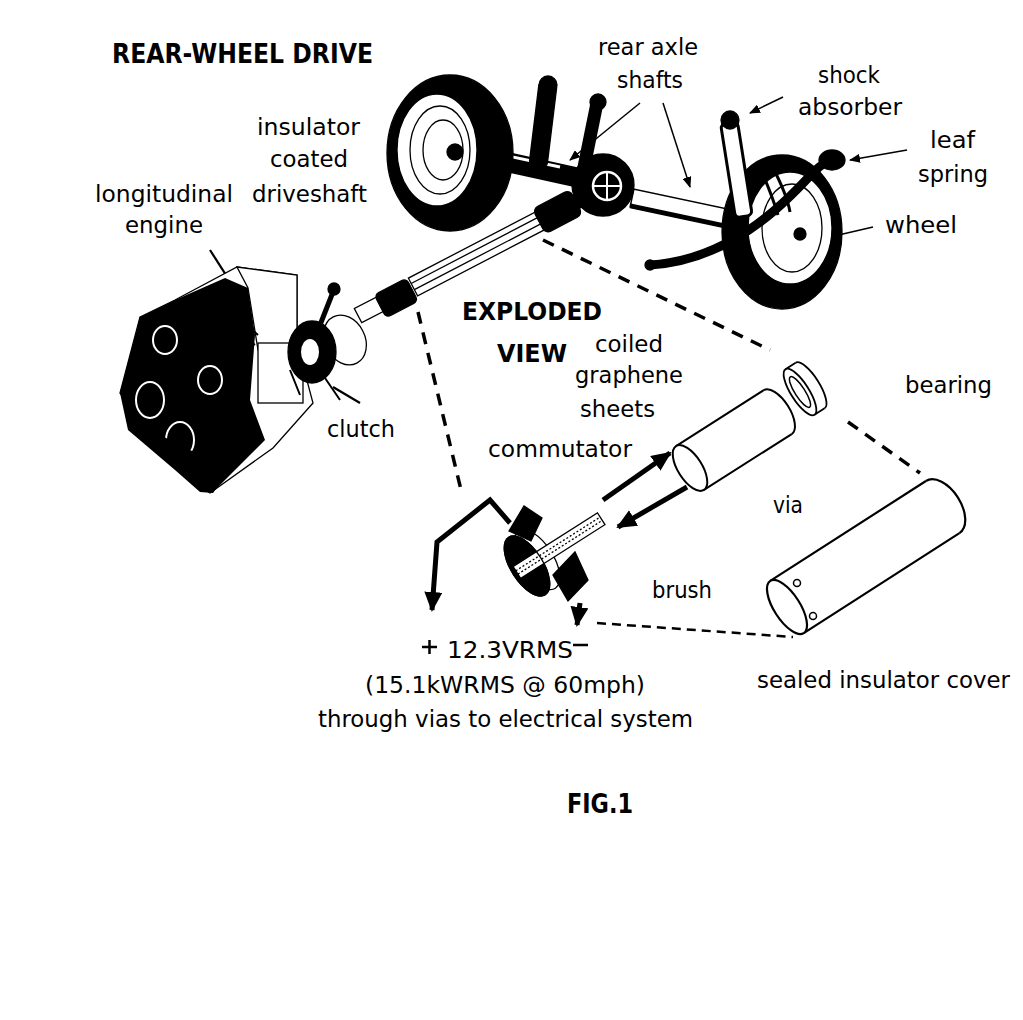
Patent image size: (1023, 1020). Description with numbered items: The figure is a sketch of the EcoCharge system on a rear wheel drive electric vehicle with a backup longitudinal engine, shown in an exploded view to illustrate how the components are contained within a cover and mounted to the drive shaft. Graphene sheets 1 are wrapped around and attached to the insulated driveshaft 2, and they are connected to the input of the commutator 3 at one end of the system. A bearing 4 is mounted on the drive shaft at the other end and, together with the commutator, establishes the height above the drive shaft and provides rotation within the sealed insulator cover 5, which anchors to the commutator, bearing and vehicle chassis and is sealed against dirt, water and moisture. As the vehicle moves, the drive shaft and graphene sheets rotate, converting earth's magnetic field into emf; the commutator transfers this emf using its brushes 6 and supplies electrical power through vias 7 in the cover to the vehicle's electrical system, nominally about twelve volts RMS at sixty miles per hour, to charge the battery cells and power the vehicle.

The graphene sheets 1 is at (718, 423).
The insulated driveshaft 2 is at (412, 290).
The commutator 3 is at (546, 470).
The bearing 4 is at (828, 384).
The sealed insulator cover 5 is at (877, 587).
The brushes 6 is at (590, 587).
The vias 7 is at (799, 576).